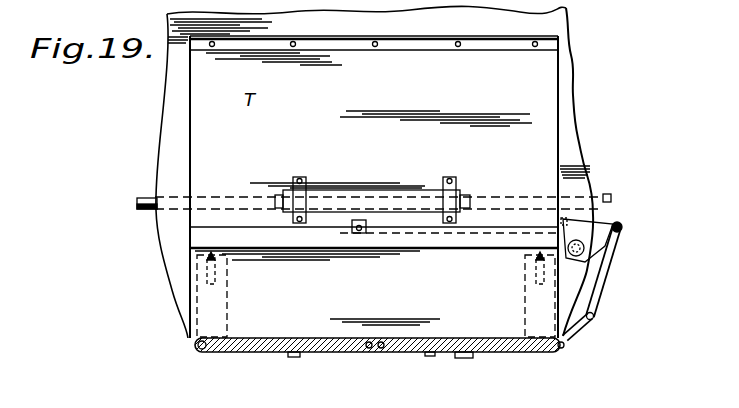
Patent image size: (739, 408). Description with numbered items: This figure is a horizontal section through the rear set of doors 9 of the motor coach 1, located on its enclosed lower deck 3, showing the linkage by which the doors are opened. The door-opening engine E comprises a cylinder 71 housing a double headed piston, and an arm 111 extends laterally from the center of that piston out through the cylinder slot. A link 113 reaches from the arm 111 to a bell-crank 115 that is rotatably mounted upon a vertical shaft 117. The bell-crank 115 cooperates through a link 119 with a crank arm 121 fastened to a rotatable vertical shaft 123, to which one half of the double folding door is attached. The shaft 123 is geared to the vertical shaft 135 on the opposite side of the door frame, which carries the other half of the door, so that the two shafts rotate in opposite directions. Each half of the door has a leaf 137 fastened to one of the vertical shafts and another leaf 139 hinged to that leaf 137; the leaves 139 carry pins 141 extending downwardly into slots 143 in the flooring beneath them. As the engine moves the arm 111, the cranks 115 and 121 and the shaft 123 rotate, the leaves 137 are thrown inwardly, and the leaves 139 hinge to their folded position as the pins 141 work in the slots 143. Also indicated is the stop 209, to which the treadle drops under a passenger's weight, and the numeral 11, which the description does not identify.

The motor coach 1 is at (177, 139).
The lower deck 3 is at (172, 257).
The set of doors 9 is at (352, 350).
The strip support 11 is at (435, 353).
The cylinder 71 is at (320, 190).
The arm 111 is at (355, 226).
The link 113 is at (488, 238).
The bell-crank 115 is at (606, 238).
The vertical shaft 117 is at (596, 223).
The link 119 is at (604, 286).
The crank arm 121 is at (568, 332).
The rotatable vertical shaft 123 is at (562, 350).
The vertical shaft 135 is at (196, 346).
The leaf 137 is at (243, 341).
The leaf 139 is at (428, 338).
The pin 141 is at (382, 340).
The slot 143 is at (330, 340).
The stop 209 is at (393, 404).
The door-opening engine E is at (424, 184).